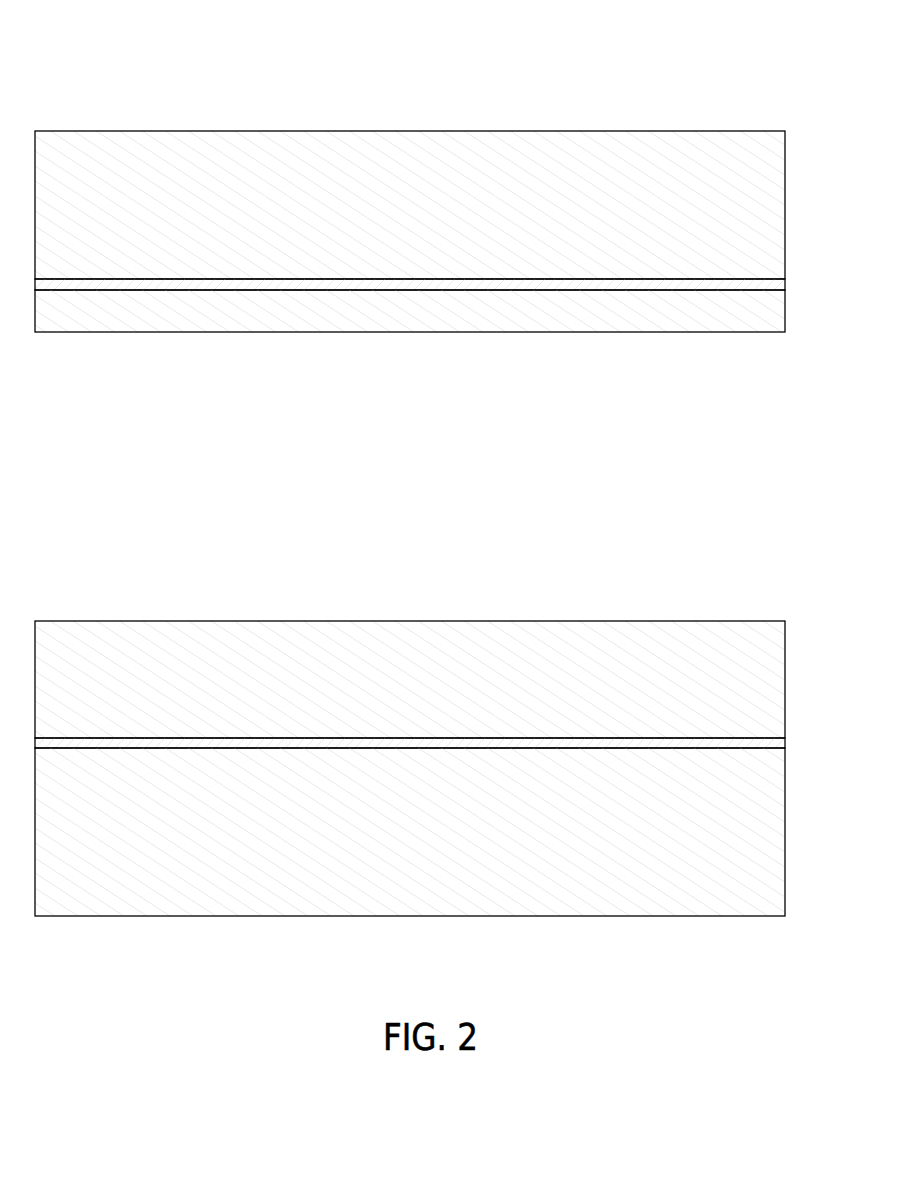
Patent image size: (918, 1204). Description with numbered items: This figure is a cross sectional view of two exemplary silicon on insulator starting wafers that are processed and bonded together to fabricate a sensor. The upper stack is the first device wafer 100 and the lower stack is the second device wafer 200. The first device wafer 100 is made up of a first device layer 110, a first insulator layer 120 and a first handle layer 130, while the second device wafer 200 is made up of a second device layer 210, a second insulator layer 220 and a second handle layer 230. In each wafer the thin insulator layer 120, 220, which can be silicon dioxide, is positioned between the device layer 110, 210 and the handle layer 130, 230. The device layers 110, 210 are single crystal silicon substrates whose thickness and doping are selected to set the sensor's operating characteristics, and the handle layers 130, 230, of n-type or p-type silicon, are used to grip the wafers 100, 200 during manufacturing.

The first device wafer 100 is at (630, 71).
The first device layer 110 is at (785, 324).
The first insulator layer 120 is at (785, 282).
The first handle layer 130 is at (785, 223).
The second device wafer 200 is at (650, 558).
The second device layer 210 is at (785, 680).
The second insulator layer 220 is at (785, 740).
The second handle layer 230 is at (785, 830).